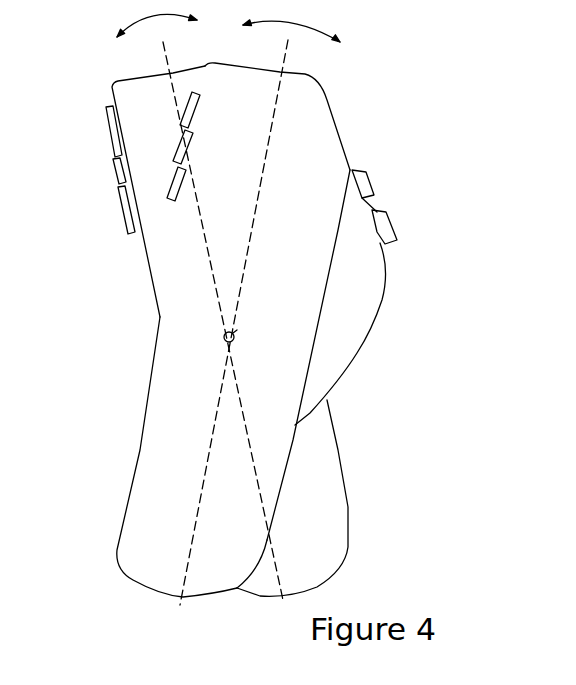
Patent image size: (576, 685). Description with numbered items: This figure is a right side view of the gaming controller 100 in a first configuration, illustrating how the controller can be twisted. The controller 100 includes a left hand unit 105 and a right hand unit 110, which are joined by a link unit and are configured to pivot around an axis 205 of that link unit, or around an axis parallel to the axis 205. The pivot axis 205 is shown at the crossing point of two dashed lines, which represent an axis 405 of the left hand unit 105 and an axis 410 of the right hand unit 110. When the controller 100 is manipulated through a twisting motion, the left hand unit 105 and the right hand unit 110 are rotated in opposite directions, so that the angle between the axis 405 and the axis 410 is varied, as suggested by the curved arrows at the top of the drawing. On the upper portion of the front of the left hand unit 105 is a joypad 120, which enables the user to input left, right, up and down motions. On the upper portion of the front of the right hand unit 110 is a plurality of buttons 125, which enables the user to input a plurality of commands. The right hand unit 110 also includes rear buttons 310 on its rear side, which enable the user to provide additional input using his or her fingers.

The controller 100 is at (392, 59).
The left hand unit 105 is at (118, 82).
The right hand unit 110 is at (332, 108).
The joypad 120 is at (108, 130).
The plurality of buttons 125 is at (234, 104).
The axis 205 is at (212, 342).
The rear buttons 310 is at (390, 222).
The axis 405 is at (274, 512).
The axis 410 is at (186, 513).